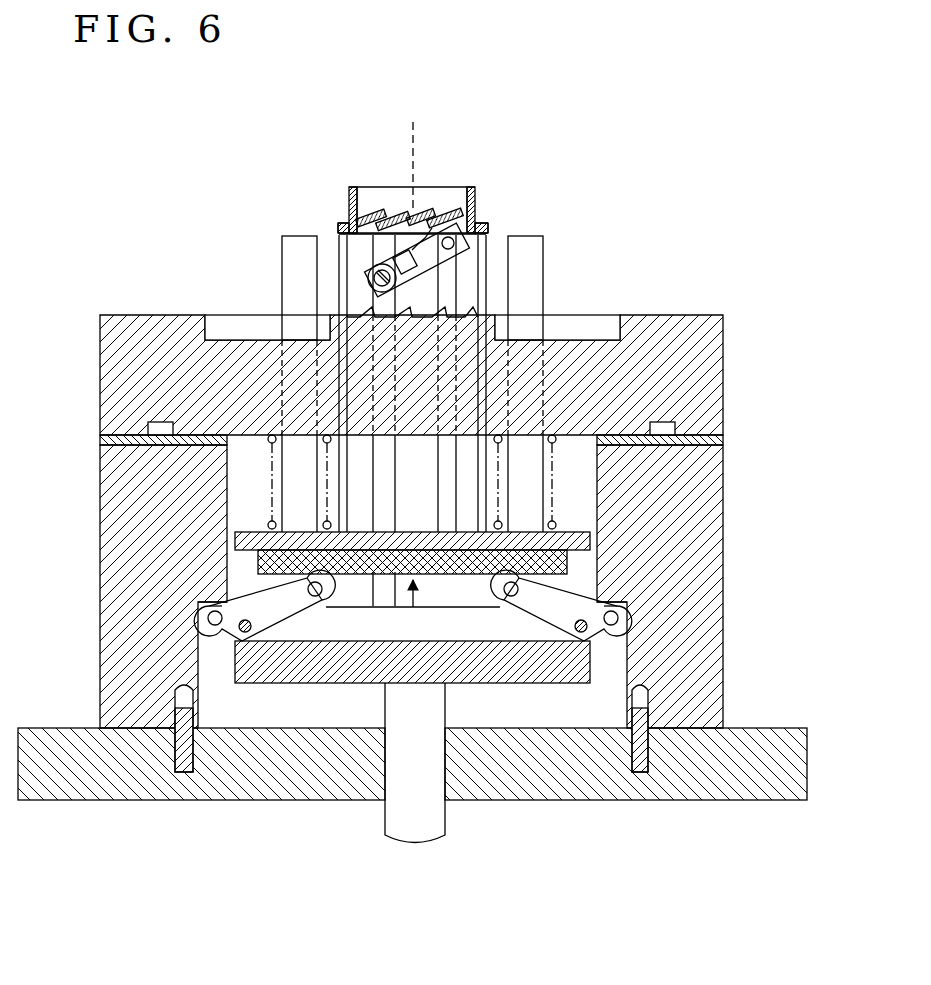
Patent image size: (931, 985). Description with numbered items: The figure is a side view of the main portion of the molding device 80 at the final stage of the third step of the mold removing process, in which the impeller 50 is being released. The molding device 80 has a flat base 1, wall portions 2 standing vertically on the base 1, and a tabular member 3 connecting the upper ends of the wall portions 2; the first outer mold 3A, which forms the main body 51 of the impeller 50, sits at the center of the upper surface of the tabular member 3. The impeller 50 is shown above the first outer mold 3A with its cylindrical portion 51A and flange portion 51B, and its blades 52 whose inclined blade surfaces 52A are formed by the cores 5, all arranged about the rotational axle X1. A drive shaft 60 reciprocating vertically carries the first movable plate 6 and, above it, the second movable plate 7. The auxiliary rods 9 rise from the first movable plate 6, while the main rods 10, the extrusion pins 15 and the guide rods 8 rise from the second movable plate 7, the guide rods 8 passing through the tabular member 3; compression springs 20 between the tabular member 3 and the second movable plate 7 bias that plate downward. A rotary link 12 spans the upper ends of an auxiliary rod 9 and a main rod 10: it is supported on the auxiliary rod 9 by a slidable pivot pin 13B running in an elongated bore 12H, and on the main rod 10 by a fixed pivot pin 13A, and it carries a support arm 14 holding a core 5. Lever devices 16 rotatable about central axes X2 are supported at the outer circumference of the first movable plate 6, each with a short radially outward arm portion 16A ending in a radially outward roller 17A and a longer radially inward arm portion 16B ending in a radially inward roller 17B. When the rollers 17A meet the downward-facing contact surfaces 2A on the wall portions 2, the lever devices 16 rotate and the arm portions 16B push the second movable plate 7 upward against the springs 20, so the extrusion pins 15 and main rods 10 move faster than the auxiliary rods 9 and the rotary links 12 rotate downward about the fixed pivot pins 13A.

The molding device 80 is at (115, 285).
The base 1 is at (777, 728).
The drive shaft 60 is at (385, 823).
The tabular member 3 is at (724, 368).
The first outer mold 3A is at (497, 325).
The wall portions 2 is at (724, 466).
The contact surfaces 2A is at (202, 609).
The extrusion pins 15 is at (337, 307).
The rotary link 12 is at (383, 257).
The elongated bore 12H is at (340, 274).
The auxiliary rods 9 is at (388, 500).
The cores 5 is at (443, 252).
The fixed pivot pin 13A is at (456, 243).
The slidable pivot pin 13B is at (374, 274).
The support arms 14 is at (410, 272).
The impeller 50 is at (398, 185).
The main body 51 is at (574, 146).
The cylindrical portion 51A is at (476, 195).
The flange portion 51B is at (488, 228).
The blades 52 is at (398, 214).
The blade surfaces 52A is at (430, 207).
The rotational axle X1 is at (416, 155).
The guide rods 8 is at (290, 480).
The compression springs 20 is at (269, 522).
The second movable plate 7 is at (585, 545).
The main rods 10 is at (452, 574).
The first movable plate 6 is at (492, 687).
The lever devices 16 is at (253, 602).
The radially outward arm portion 16A is at (228, 634).
The radially inward arm portion 16B is at (283, 612).
The radially outward roller 17A is at (200, 614).
The radially inward roller 17B is at (330, 605).
The central axes X2 is at (247, 633).